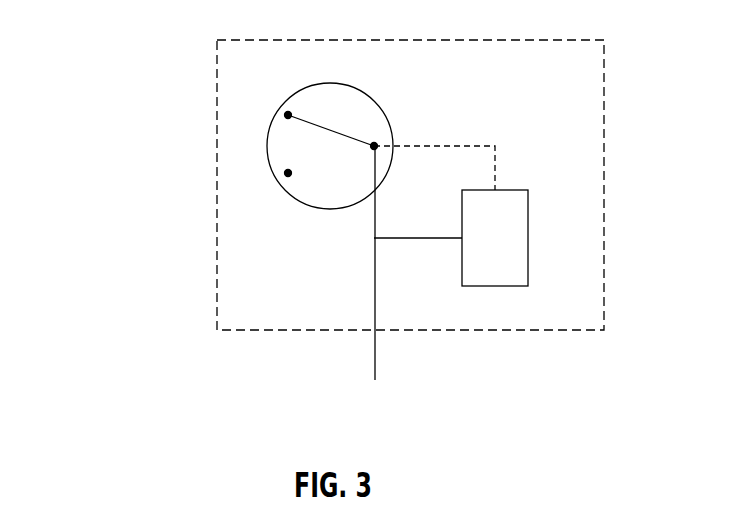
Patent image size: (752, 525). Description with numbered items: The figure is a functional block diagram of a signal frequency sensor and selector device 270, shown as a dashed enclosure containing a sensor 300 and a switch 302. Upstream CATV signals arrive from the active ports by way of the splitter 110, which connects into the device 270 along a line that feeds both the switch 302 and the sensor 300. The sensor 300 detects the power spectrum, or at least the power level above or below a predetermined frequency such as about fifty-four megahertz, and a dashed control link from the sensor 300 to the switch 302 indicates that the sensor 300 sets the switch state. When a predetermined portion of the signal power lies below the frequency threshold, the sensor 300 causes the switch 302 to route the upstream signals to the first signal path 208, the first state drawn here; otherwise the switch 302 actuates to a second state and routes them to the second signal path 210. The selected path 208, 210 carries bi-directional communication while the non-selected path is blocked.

The signal frequency sensor and selector device 270 is at (575, 38).
The switch 302 is at (366, 94).
The first signal path 208 is at (288, 115).
The second signal path 210 is at (288, 173).
The sensor 300 is at (517, 252).
The splitter 110 is at (395, 416).